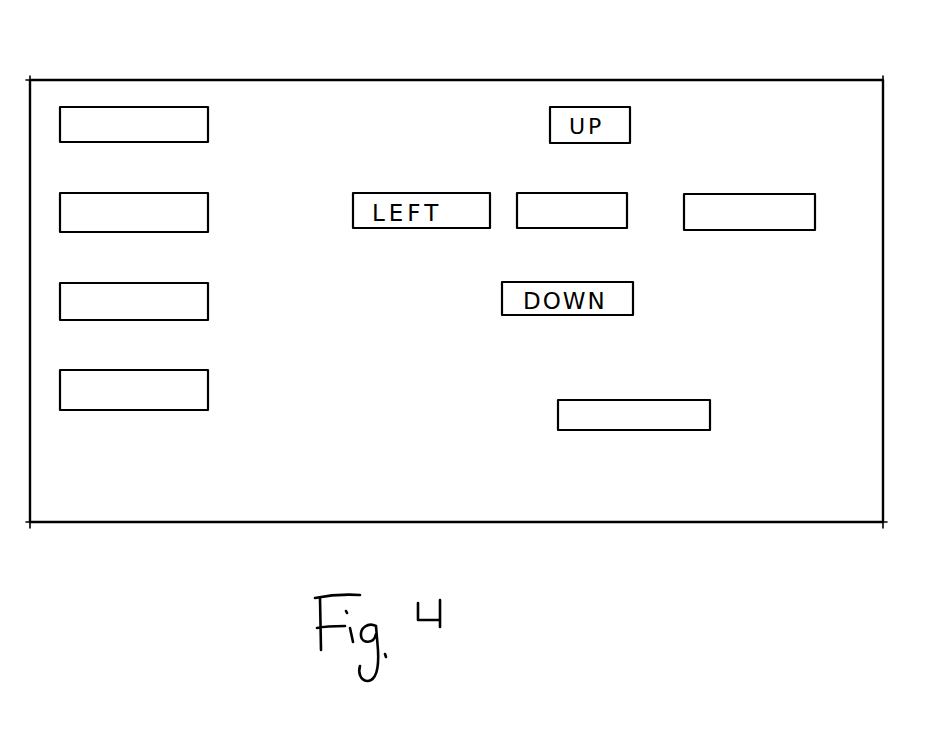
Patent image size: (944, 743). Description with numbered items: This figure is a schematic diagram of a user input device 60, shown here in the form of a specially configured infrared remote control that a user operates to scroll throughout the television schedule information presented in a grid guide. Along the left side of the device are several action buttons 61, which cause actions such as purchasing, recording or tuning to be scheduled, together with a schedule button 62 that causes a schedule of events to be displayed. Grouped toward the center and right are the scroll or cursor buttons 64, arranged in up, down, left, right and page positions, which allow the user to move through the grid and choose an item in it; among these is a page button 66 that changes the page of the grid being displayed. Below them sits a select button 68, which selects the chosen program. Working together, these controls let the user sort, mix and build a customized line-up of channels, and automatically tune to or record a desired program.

The user input device 60 is at (357, 80).
The action buttons 61 is at (228, 187).
The schedule button 62 is at (208, 126).
The scroll or cursor buttons 64 is at (764, 173).
The page button 66 is at (587, 193).
The select button 68 is at (600, 399).